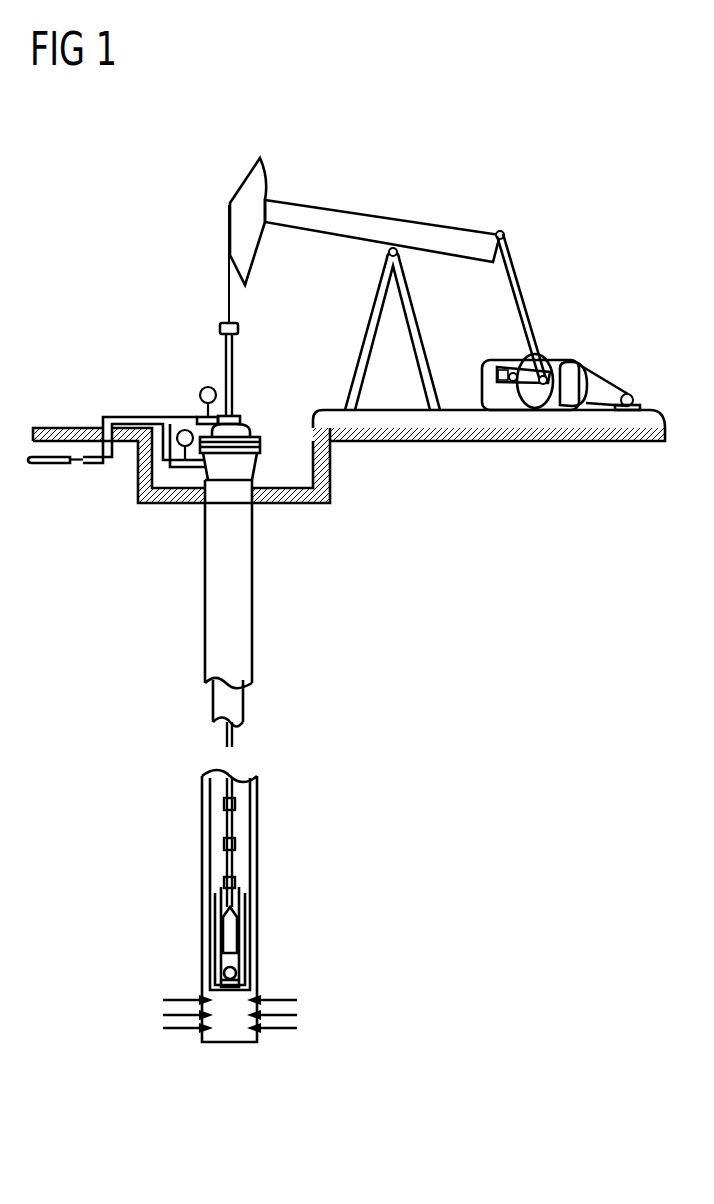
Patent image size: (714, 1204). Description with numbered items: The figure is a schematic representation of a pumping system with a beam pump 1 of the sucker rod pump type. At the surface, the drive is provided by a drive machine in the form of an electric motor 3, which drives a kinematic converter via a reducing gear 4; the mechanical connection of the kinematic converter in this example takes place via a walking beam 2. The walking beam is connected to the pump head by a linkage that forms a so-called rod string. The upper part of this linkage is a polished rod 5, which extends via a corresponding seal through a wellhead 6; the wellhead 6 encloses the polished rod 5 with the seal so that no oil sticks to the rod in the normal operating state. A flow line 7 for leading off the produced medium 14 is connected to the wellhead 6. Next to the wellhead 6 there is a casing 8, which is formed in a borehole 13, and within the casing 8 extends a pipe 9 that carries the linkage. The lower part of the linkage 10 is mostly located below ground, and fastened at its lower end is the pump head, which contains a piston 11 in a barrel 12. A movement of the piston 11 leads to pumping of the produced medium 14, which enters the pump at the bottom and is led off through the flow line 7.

The beam pump 1 is at (165, 272).
The walking beam 2 is at (357, 223).
The electric motor 3 is at (642, 382).
The reducing gear 4 is at (502, 365).
The polished rod 5 is at (232, 363).
The wellhead 6 is at (240, 433).
The flow line 7 is at (94, 508).
The casing 8 is at (242, 623).
The pipe 9 is at (241, 698).
The lower part of the linkage 10 is at (232, 738).
The piston 11 is at (230, 933).
The barrel 12 is at (247, 972).
The borehole 13 is at (202, 932).
The produced medium 14 is at (172, 993).